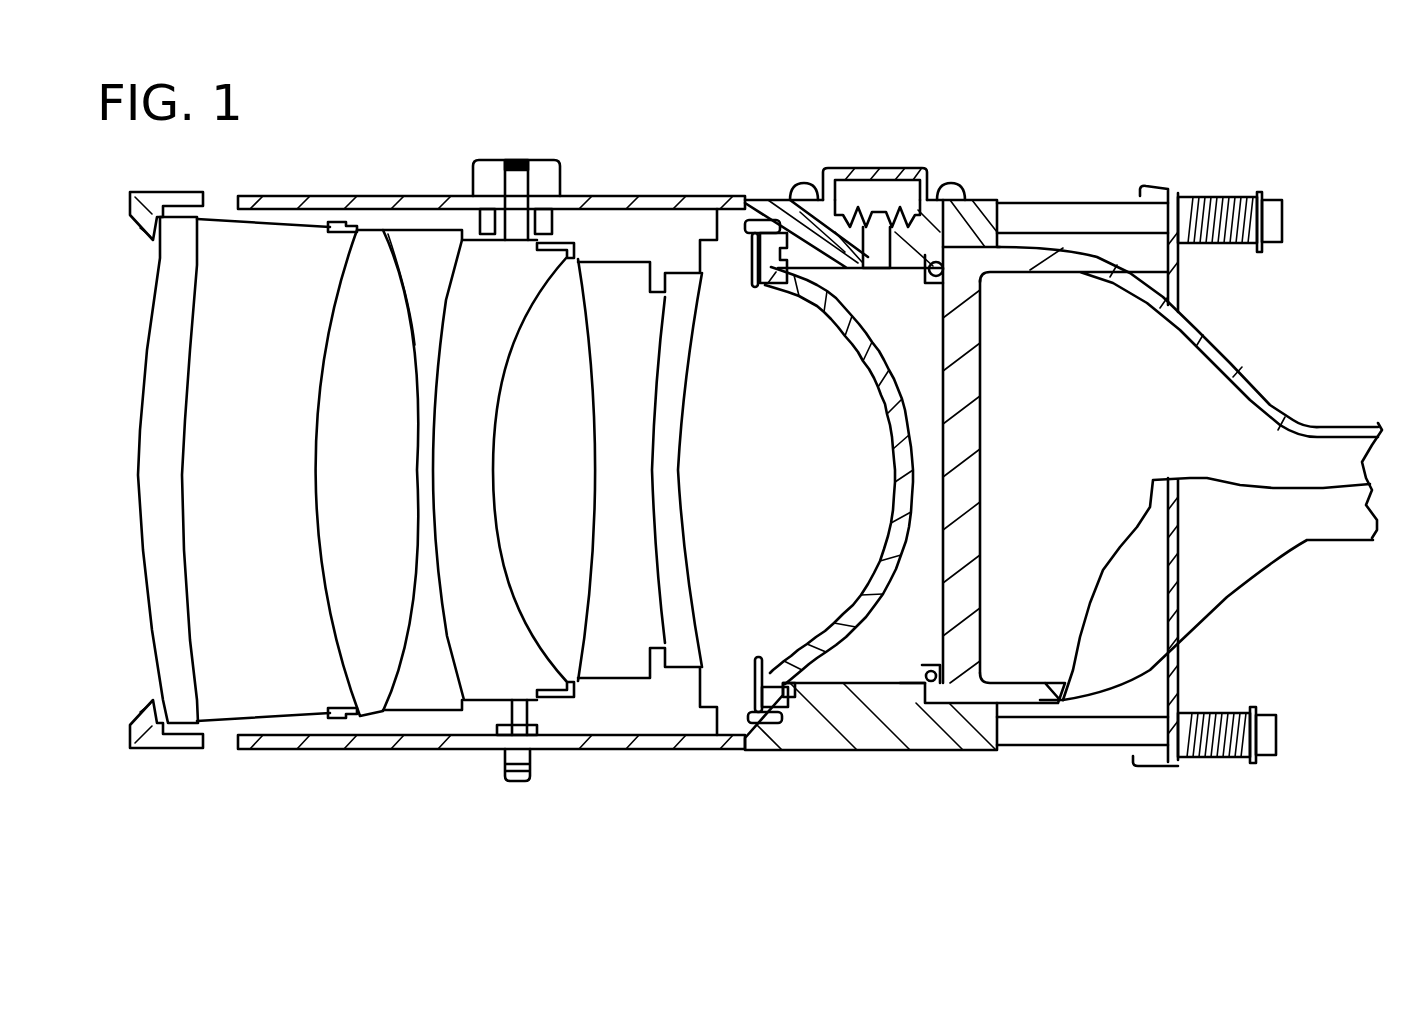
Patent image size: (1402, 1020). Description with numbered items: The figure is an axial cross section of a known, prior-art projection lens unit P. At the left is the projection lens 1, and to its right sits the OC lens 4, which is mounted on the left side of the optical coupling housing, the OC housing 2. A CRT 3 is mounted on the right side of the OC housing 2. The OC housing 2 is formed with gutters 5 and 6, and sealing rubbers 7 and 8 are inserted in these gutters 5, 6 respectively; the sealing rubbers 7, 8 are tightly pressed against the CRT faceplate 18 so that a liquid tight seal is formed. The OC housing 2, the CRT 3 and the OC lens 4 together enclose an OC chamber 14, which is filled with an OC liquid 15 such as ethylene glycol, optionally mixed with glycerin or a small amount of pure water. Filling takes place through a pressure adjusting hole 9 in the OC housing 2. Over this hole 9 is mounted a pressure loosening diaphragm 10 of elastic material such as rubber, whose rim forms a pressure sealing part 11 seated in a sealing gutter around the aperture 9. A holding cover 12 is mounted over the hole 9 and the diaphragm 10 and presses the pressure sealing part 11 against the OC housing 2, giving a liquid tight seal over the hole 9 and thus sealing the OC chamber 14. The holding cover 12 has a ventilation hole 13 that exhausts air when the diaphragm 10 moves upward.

The projection lens 1 is at (783, 786).
The OC housing 2 is at (900, 750).
The CRT 3 is at (1213, 617).
The OC lens 4 is at (837, 322).
The gutter 5 is at (787, 697).
The gutter 6 is at (927, 683).
The sealing rubber 7 is at (758, 675).
The sealing rubber 8 is at (940, 680).
The pressure adjusting hole 9 is at (850, 279).
The pressure loosening diaphragm 10 is at (883, 223).
The pressure sealing part 11 is at (943, 200).
The holding cover 12 is at (840, 168).
The ventilation hole 13 is at (900, 175).
The OC chamber 14 is at (910, 380).
The OC liquid 15 is at (897, 583).
The CRT faceplate 18 is at (973, 367).
The projection lens unit P is at (450, 97).